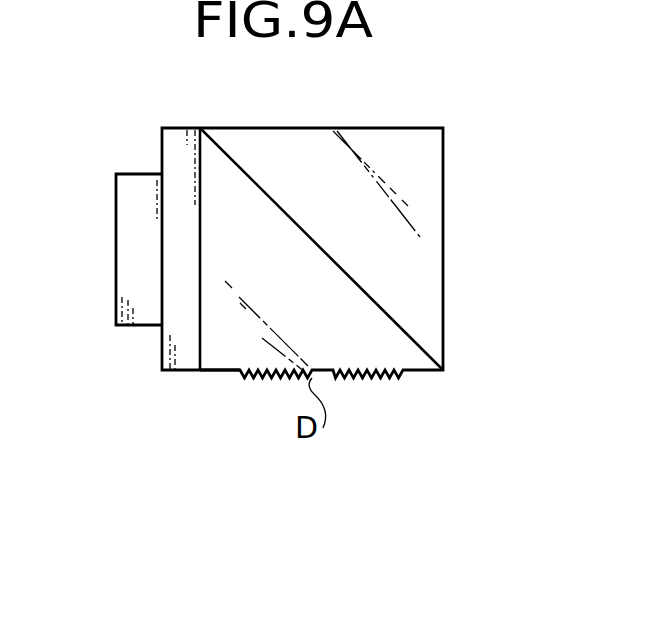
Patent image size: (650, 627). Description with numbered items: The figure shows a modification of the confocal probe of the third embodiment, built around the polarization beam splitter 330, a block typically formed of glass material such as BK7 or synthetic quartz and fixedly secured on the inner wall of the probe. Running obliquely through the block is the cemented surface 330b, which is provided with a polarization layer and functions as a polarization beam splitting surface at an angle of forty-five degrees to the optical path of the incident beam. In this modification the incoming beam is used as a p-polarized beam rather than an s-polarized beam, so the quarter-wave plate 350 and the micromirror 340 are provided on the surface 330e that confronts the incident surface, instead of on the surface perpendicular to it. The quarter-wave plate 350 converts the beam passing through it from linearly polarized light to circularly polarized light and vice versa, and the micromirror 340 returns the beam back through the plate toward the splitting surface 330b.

The polarization beam splitter 330 is at (417, 103).
The cemented surface 330b is at (387, 312).
The surface confronting the incident surface 330e is at (225, 340).
The micromirror 340 is at (128, 196).
The λ/4 plate 350 is at (170, 349).